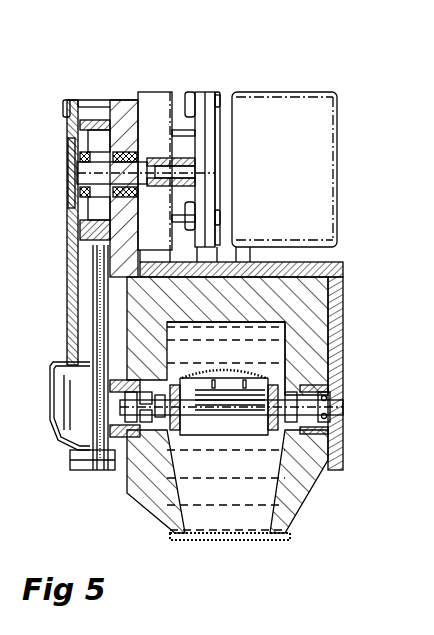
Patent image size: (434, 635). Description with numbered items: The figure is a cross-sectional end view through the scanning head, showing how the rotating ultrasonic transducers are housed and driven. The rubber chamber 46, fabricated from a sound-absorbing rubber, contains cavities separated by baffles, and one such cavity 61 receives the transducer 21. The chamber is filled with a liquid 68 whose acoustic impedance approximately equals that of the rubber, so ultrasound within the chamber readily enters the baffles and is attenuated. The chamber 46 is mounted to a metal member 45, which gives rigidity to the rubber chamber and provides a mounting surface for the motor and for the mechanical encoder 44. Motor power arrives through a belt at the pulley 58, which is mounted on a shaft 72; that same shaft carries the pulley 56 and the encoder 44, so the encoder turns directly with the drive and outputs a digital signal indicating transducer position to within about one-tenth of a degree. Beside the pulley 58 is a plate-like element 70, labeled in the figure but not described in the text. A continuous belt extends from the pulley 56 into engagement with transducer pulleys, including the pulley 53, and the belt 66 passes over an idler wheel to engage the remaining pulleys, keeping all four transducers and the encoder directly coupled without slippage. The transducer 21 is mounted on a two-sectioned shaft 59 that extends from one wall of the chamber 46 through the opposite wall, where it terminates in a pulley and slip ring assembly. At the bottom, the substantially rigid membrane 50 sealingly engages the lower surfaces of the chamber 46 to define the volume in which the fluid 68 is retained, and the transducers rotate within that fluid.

The transducer 21 is at (238, 432).
The mechanical encoder 44 is at (284, 177).
The metal member 45 is at (340, 283).
The rubber chamber 46 is at (320, 350).
The membrane 50 is at (222, 541).
The pulley 53 is at (90, 450).
The pulley 56 is at (90, 139).
The pulley 58 is at (155, 100).
The two-sectioned shaft 59 is at (335, 412).
The cavity 61 is at (263, 324).
The belt 66 is at (98, 300).
The liquid 68 is at (226, 345).
The plate 70 is at (200, 92).
The shaft 72 is at (88, 176).